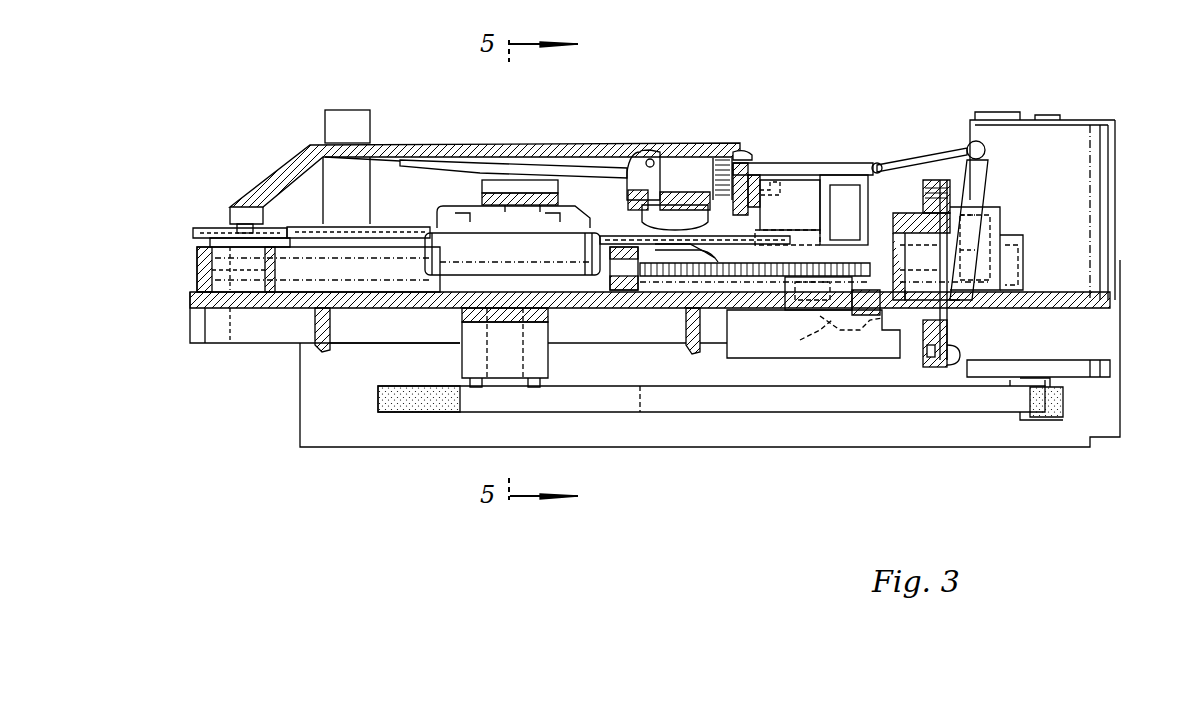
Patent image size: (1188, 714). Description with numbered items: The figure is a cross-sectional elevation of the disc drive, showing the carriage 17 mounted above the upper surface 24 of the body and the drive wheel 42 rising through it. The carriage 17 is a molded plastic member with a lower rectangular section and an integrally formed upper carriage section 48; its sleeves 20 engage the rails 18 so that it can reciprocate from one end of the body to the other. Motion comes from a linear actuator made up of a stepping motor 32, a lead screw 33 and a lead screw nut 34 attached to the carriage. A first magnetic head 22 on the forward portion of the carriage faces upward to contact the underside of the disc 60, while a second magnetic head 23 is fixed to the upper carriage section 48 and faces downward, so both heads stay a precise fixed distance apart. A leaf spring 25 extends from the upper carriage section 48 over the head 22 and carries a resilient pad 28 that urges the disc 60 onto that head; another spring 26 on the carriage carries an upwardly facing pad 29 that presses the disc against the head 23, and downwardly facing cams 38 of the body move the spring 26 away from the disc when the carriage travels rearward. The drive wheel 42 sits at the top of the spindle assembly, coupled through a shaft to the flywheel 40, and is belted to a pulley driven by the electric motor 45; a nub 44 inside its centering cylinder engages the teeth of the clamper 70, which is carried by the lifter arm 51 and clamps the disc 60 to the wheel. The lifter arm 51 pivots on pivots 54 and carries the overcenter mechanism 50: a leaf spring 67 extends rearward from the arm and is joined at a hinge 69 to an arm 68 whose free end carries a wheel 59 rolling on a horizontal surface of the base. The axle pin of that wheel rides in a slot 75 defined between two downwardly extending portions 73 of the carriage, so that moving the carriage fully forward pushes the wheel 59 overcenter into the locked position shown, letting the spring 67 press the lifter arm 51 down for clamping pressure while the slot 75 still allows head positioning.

The carriage 17 is at (397, 262).
The rails 18 is at (355, 262).
The sleeves 20 is at (615, 248).
The first magnetic head 22 is at (205, 236).
The second magnetic head 23 is at (681, 205).
The upper surface 24 is at (300, 296).
The leaf spring 25 is at (521, 143).
The spring 26 is at (693, 252).
The resilient pad 28 is at (240, 223).
The resilient pad 29 is at (718, 245).
The stepping motor 32 is at (998, 222).
The lead screw 33 is at (668, 277).
The lead screw nut 34 is at (625, 292).
The cams 38 is at (790, 257).
The flywheel 40 is at (607, 400).
The drive wheel 42 is at (512, 254).
The nub 44 is at (1038, 410).
The electric motor 45 is at (1108, 173).
The upper carriage section 48 is at (792, 165).
The overcenter mechanism 50 is at (977, 130).
The lifter arm 51 is at (574, 167).
The pivots 54 is at (784, 202).
The wheel 59 is at (970, 342).
The disc 60 is at (195, 230).
The leaf spring 67 is at (903, 165).
The arm 68 is at (980, 175).
The hinge 69 is at (986, 150).
The clamper 70 is at (460, 217).
The downwardly extending portions 73 is at (813, 334).
The slot 75 is at (886, 340).